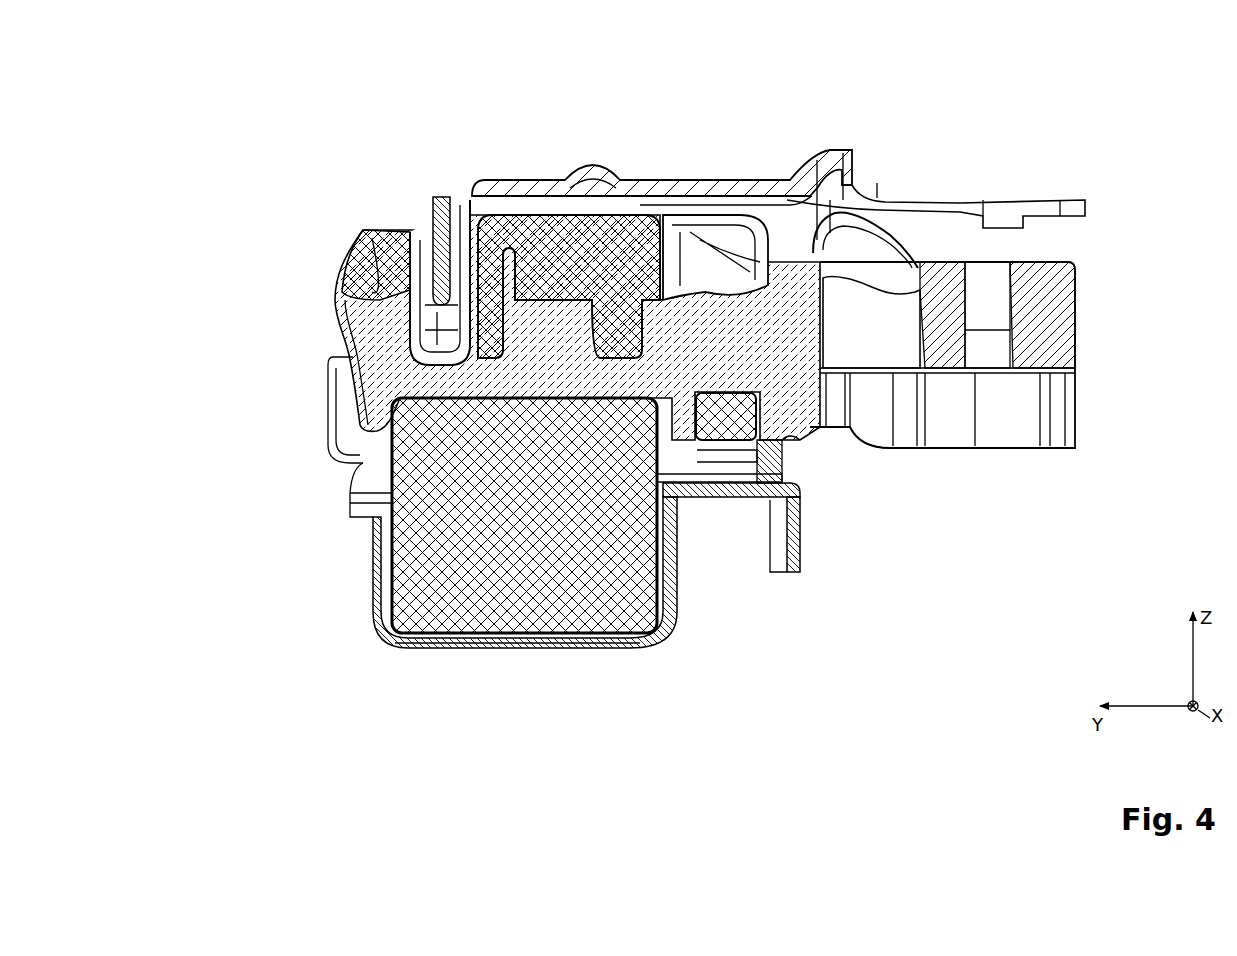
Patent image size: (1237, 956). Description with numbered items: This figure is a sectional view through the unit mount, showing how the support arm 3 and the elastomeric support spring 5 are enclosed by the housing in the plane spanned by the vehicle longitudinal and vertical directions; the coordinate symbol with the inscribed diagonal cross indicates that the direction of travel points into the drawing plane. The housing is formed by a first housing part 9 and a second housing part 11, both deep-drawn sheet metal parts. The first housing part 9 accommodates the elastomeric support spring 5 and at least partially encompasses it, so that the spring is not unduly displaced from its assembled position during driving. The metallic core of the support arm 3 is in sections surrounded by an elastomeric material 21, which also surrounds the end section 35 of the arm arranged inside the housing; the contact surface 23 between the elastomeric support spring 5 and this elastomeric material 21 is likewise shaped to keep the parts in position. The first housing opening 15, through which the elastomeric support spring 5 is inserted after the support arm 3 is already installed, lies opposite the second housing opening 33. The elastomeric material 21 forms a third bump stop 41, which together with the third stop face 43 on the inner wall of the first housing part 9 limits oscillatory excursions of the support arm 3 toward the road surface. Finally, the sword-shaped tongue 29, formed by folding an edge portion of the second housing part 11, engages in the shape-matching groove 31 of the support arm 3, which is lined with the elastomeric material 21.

The support arm 3 is at (1080, 288).
The elastomeric support spring 5 is at (600, 578).
The first housing part 9 is at (502, 640).
The second housing part 11 is at (900, 205).
The first housing opening 15 is at (352, 556).
The elastomeric material 21 is at (550, 245).
The contact surface 23 is at (403, 403).
The sword-shaped tongue 29 is at (382, 291).
The shape-matching groove 31 is at (380, 325).
The second housing opening 33 is at (864, 477).
The end section 35 is at (525, 370).
The third bump stop 41 is at (790, 460).
The third stop face 43 is at (780, 463).